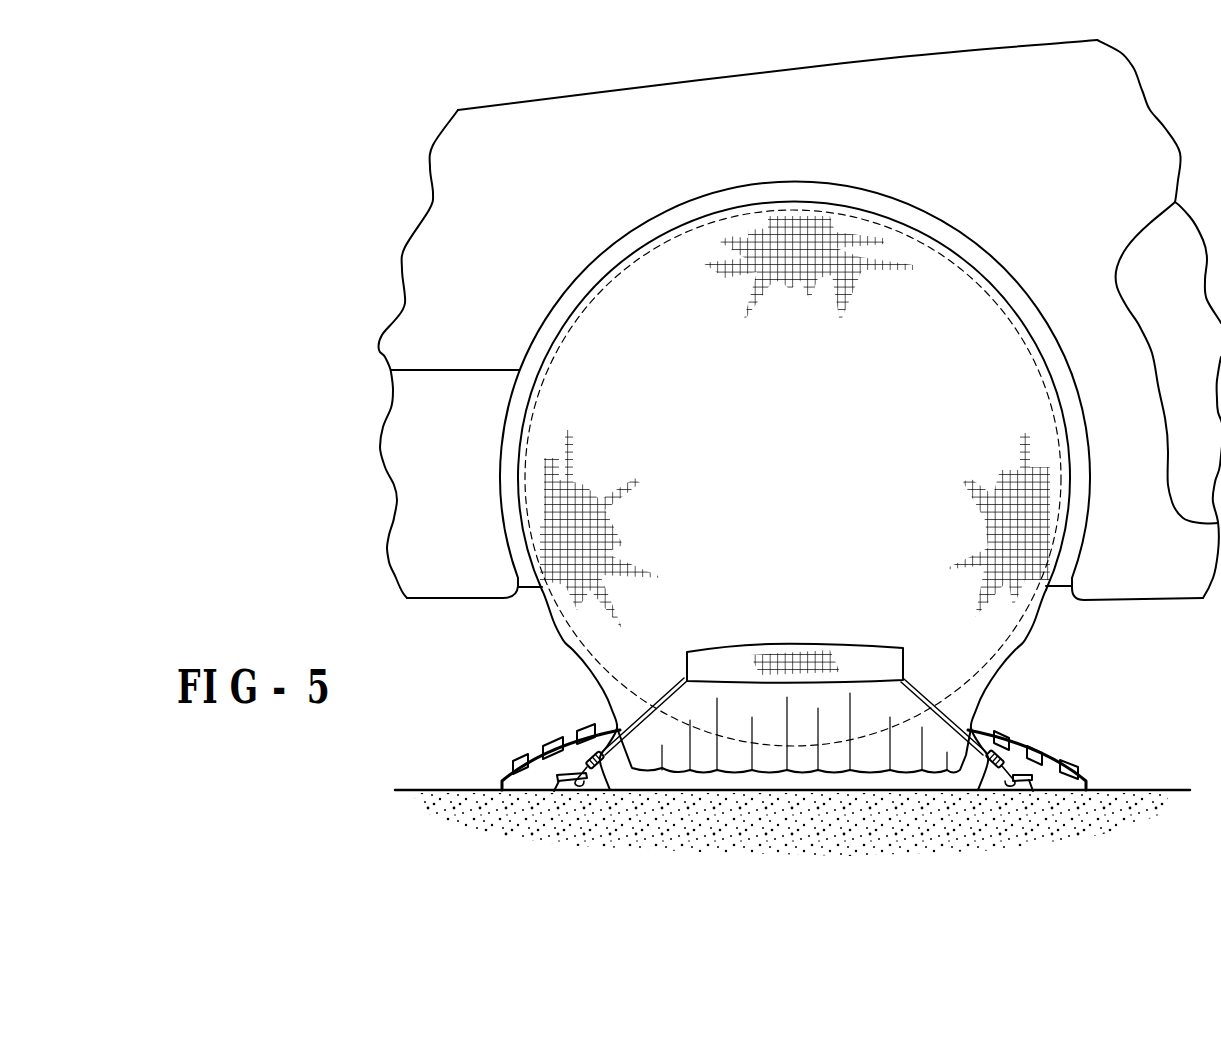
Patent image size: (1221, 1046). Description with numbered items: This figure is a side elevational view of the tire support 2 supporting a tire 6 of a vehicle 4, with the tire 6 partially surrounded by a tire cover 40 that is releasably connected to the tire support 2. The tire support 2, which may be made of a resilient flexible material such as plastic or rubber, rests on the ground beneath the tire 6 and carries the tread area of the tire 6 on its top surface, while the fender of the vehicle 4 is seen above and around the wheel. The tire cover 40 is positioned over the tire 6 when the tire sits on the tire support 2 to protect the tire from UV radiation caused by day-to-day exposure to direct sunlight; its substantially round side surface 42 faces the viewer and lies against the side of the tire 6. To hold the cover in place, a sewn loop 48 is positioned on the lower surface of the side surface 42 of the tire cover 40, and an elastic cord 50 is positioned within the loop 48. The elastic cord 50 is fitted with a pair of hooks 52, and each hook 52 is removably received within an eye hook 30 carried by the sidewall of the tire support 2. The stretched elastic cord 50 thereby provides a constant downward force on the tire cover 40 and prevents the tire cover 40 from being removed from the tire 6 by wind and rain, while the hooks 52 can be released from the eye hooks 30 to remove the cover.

The tire support 2 is at (1058, 730).
The vehicle 4 is at (520, 105).
The tire 6 is at (795, 192).
The eye hooks 30 is at (580, 777).
The tire cover 40 is at (990, 268).
The side surface 42 is at (647, 323).
The sewn loop 48 is at (866, 667).
The elastic cord 50 is at (920, 682).
The hooks 52 is at (593, 767).